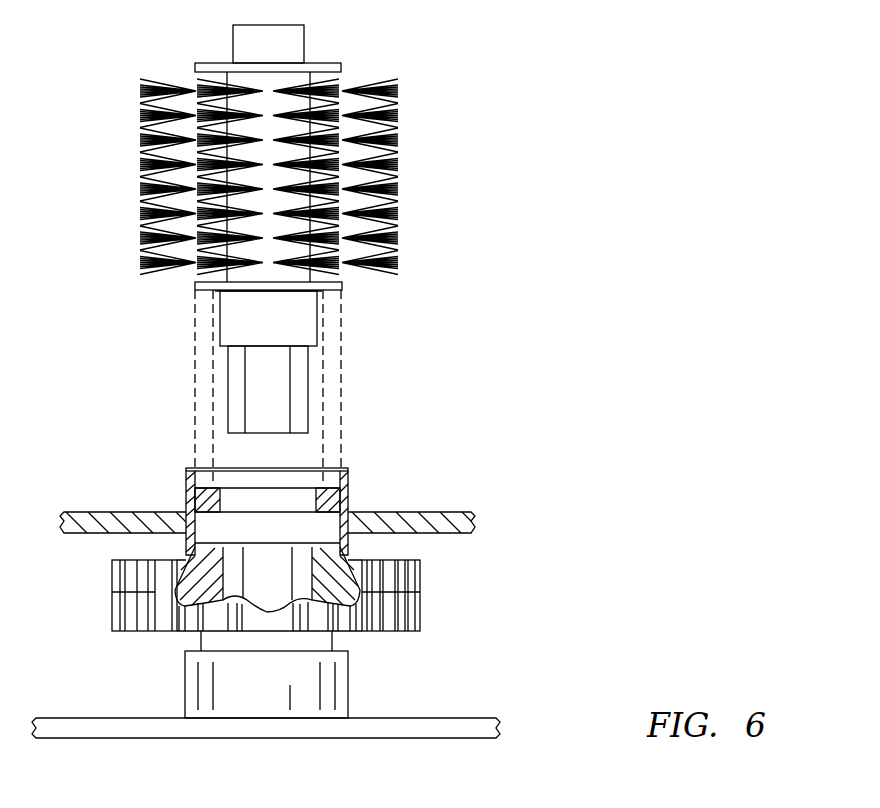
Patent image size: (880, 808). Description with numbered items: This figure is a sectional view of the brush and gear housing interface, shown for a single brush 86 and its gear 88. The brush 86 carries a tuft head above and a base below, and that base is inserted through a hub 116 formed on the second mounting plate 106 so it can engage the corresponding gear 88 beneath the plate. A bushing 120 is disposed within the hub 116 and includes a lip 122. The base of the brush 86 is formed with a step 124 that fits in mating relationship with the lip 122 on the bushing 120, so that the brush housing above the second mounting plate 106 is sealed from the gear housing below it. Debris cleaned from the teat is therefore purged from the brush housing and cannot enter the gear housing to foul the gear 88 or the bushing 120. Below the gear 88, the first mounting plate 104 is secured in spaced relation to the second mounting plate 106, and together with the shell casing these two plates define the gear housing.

The brush 86 is at (418, 72).
The step 124 is at (317, 349).
The lip 122 is at (317, 490).
The bushing 120 is at (207, 503).
The hub 116 is at (349, 490).
The second mounting plate 106 is at (428, 512).
The gear 88 is at (421, 592).
The first mounting plate 104 is at (455, 718).